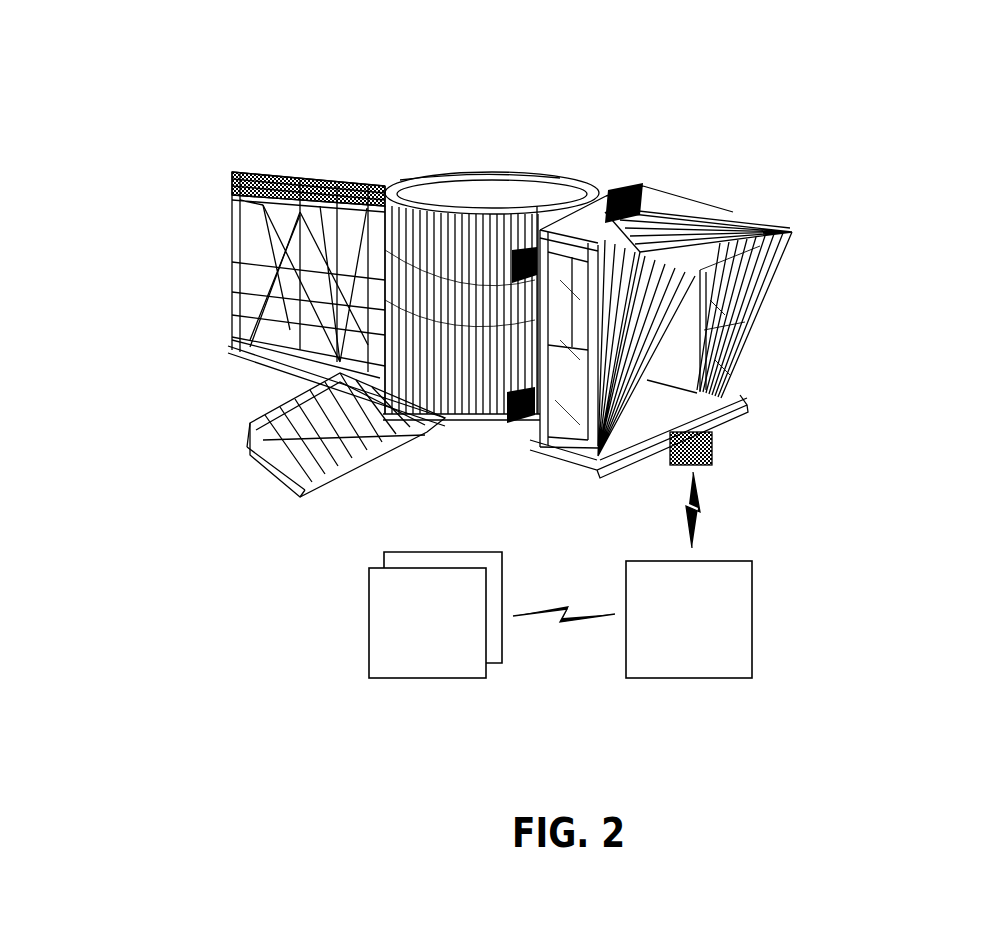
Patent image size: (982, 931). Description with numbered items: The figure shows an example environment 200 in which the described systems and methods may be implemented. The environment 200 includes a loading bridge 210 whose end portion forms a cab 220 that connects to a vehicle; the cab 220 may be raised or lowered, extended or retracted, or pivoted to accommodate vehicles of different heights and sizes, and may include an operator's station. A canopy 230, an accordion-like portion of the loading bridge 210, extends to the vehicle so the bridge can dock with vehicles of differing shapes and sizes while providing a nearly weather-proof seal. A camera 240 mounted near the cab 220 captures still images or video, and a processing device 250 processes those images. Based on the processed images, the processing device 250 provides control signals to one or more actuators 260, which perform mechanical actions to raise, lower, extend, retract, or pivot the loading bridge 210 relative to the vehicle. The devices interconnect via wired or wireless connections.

The environment 200 is at (108, 31).
The loading bridge 210 is at (795, 152).
The cab 220 is at (775, 350).
The canopy 230 is at (793, 232).
The camera 240 is at (714, 450).
The processing device 250 is at (706, 653).
The actuator 260 is at (520, 284).